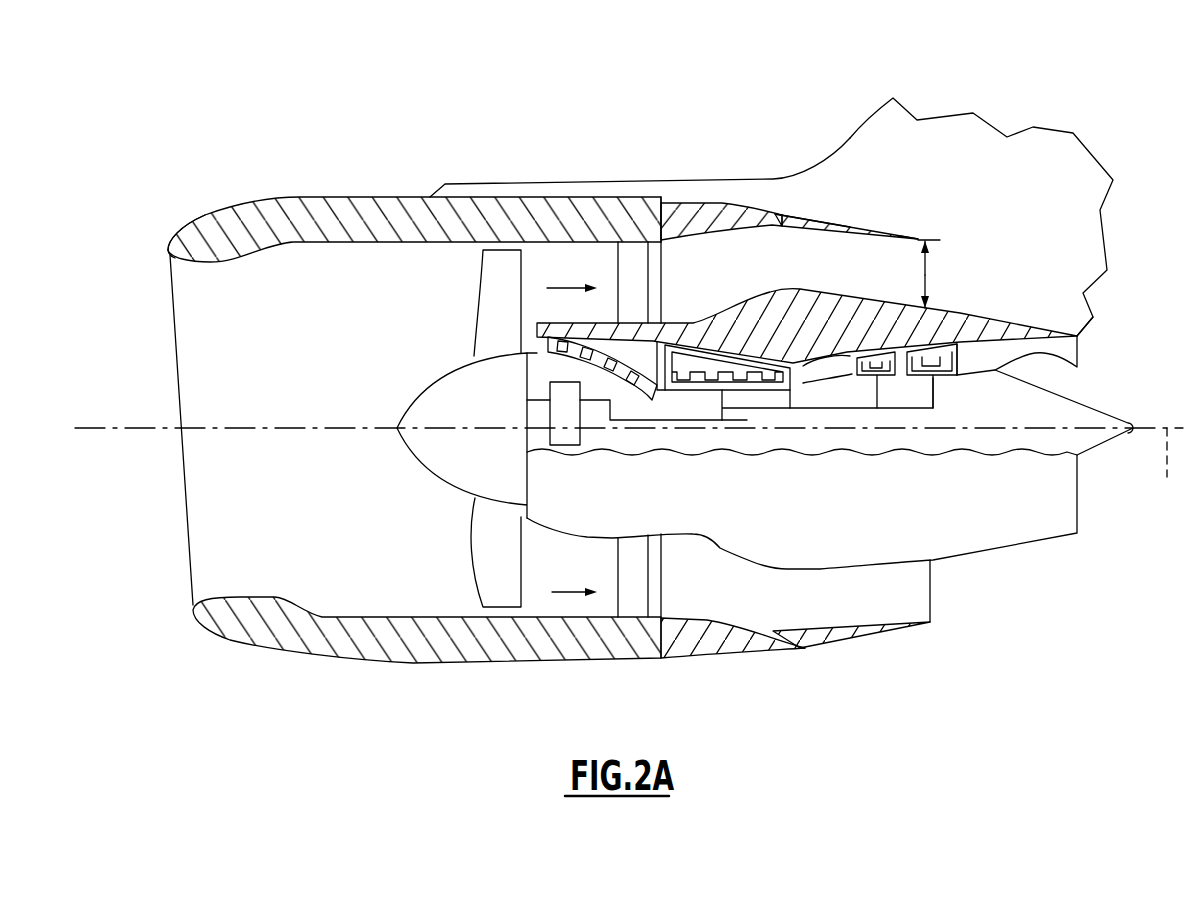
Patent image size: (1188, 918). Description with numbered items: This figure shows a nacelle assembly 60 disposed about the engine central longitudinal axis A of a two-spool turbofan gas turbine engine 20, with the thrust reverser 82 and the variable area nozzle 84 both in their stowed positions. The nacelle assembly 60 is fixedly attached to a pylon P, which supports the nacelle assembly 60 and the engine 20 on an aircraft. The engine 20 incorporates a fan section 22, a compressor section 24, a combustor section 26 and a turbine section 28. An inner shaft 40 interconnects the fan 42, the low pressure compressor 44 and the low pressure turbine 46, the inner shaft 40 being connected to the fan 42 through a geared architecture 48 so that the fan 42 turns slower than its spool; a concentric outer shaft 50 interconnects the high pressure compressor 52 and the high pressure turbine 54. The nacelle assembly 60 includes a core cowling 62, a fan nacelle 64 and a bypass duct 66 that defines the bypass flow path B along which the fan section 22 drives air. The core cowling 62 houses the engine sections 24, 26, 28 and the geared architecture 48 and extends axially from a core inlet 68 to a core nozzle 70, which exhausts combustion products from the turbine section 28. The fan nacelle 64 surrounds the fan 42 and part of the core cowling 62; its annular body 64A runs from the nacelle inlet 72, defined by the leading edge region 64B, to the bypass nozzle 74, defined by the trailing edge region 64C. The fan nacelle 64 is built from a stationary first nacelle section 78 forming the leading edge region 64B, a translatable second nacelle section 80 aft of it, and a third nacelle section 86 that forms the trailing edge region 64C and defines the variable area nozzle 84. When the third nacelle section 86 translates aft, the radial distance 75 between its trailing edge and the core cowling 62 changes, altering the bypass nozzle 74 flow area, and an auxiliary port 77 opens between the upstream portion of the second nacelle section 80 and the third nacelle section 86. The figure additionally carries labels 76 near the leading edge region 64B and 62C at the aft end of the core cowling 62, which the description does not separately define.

The gas turbine engine 20 is at (214, 134).
The fan section 22 is at (450, 514).
The compressor section 24 is at (663, 410).
The combustor section 26 is at (823, 405).
The turbine section 28 is at (910, 395).
The inner shaft 40 is at (747, 421).
The fan 42 is at (477, 553).
The first (or low) pressure compressor 44 is at (633, 396).
The first (or low) pressure turbine 46 is at (962, 378).
The geared architecture 48 is at (570, 447).
The outer shaft 50 is at (780, 409).
The second (or high) pressure compressor 52 is at (702, 412).
The second (or high) pressure turbine 54 is at (870, 378).
The nacelle assembly 60 is at (188, 177).
The core cowling 62 is at (1014, 313).
The core nacelle trailing edge 62C is at (1095, 317).
The fan nacelle 64 is at (349, 190).
The annular body 64A is at (520, 178).
The leading edge region 64B is at (173, 236).
The trailing edge region 64C is at (925, 240).
The bypass duct 66 is at (852, 221).
The core inlet 68 is at (533, 336).
The core nozzle 70 is at (1078, 350).
The nacelle inlet 72 is at (173, 334).
The bypass nozzle 74 is at (937, 293).
The radial distance 75 is at (937, 264).
The inlet lip 76 is at (280, 212).
The auxiliary port 77 is at (788, 213).
The first nacelle section 78 is at (405, 196).
The second nacelle section 80 is at (721, 202).
The thrust reverser 82 is at (690, 190).
The variable area nozzle 84 is at (919, 232).
The third nacelle section 86 is at (836, 222).
The pylon P is at (990, 114).
The engine central longitudinal axis A is at (1167, 477).
The bypass flow path B is at (572, 427).